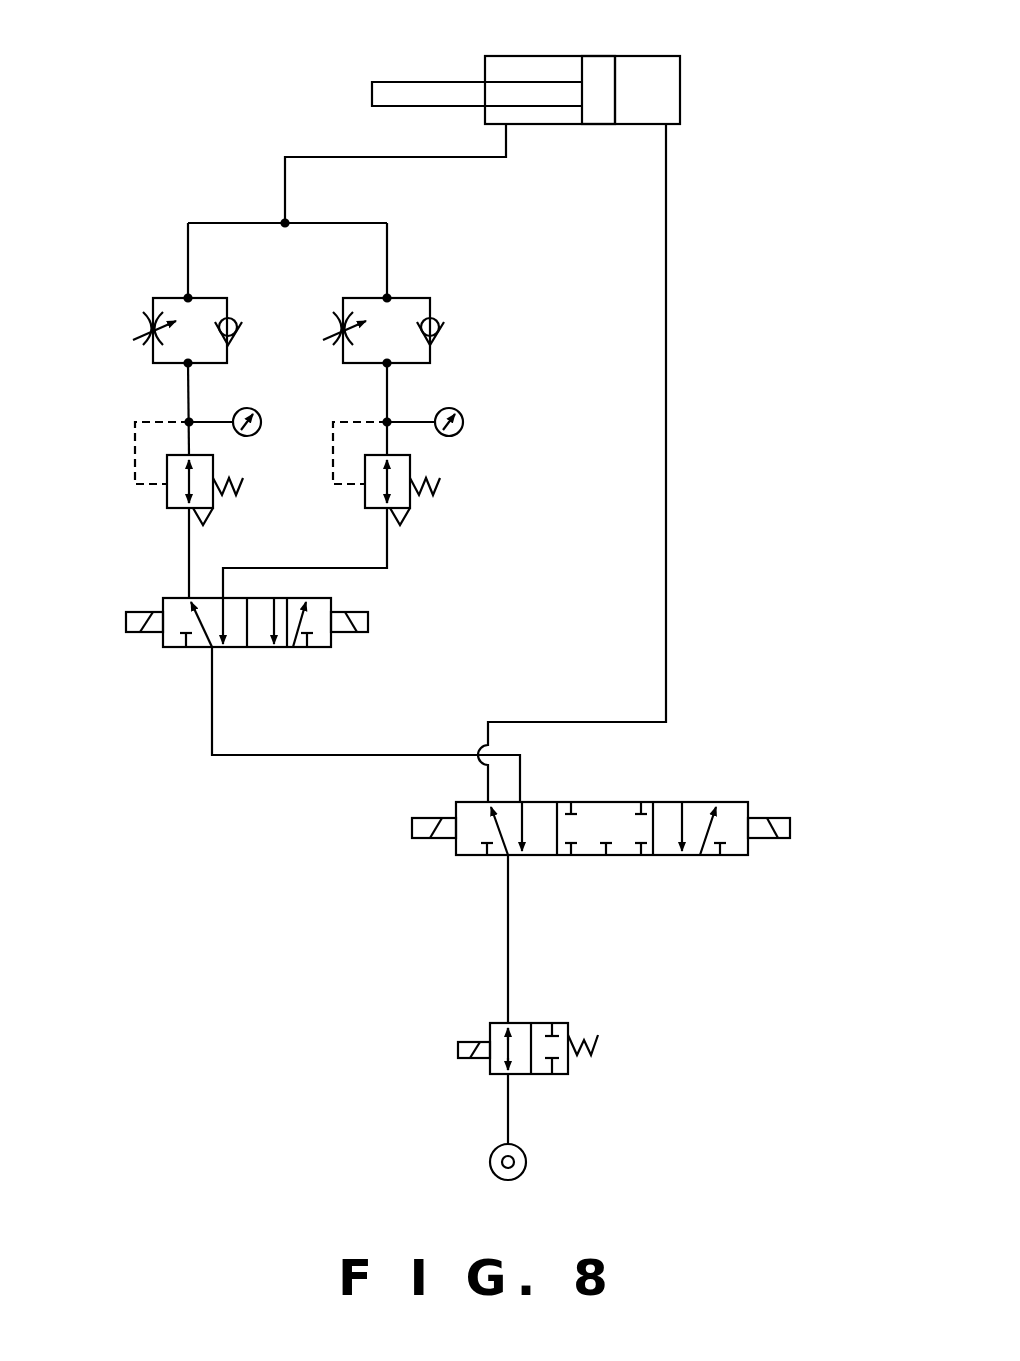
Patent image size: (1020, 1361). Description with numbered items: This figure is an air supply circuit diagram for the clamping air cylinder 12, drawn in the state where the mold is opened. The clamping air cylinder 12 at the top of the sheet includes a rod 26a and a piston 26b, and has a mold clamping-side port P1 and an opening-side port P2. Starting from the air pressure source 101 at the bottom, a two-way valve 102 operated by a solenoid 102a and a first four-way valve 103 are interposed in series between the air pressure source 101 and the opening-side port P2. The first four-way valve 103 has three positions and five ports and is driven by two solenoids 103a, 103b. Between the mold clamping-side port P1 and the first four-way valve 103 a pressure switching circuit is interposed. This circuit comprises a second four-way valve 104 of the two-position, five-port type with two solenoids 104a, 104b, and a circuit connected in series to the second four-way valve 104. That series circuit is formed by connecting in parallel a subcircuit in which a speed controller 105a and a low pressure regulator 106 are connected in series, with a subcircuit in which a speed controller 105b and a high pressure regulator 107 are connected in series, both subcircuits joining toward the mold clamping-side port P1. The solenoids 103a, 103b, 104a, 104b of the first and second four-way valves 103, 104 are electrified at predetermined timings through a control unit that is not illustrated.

The clamping air cylinder 12 is at (655, 63).
The rod 26a is at (428, 88).
The piston 26b is at (596, 68).
The mold clamping-side port P1 is at (508, 127).
The opening-side port P2 is at (668, 127).
The speed controller 105a is at (170, 292).
The speed controller 105b is at (437, 308).
The low pressure regulator 106 is at (165, 508).
The high pressure regulator 107 is at (410, 505).
The second four-way valve 104 is at (318, 648).
The solenoid 104a is at (133, 632).
The solenoid 104b is at (368, 622).
The first four-way valve 103 is at (735, 857).
The solenoid 103a is at (420, 838).
The solenoid 103b is at (780, 815).
The two-way valve 102 is at (570, 1068).
The solenoid 102a is at (460, 1058).
The air pressure source 101 is at (527, 1162).